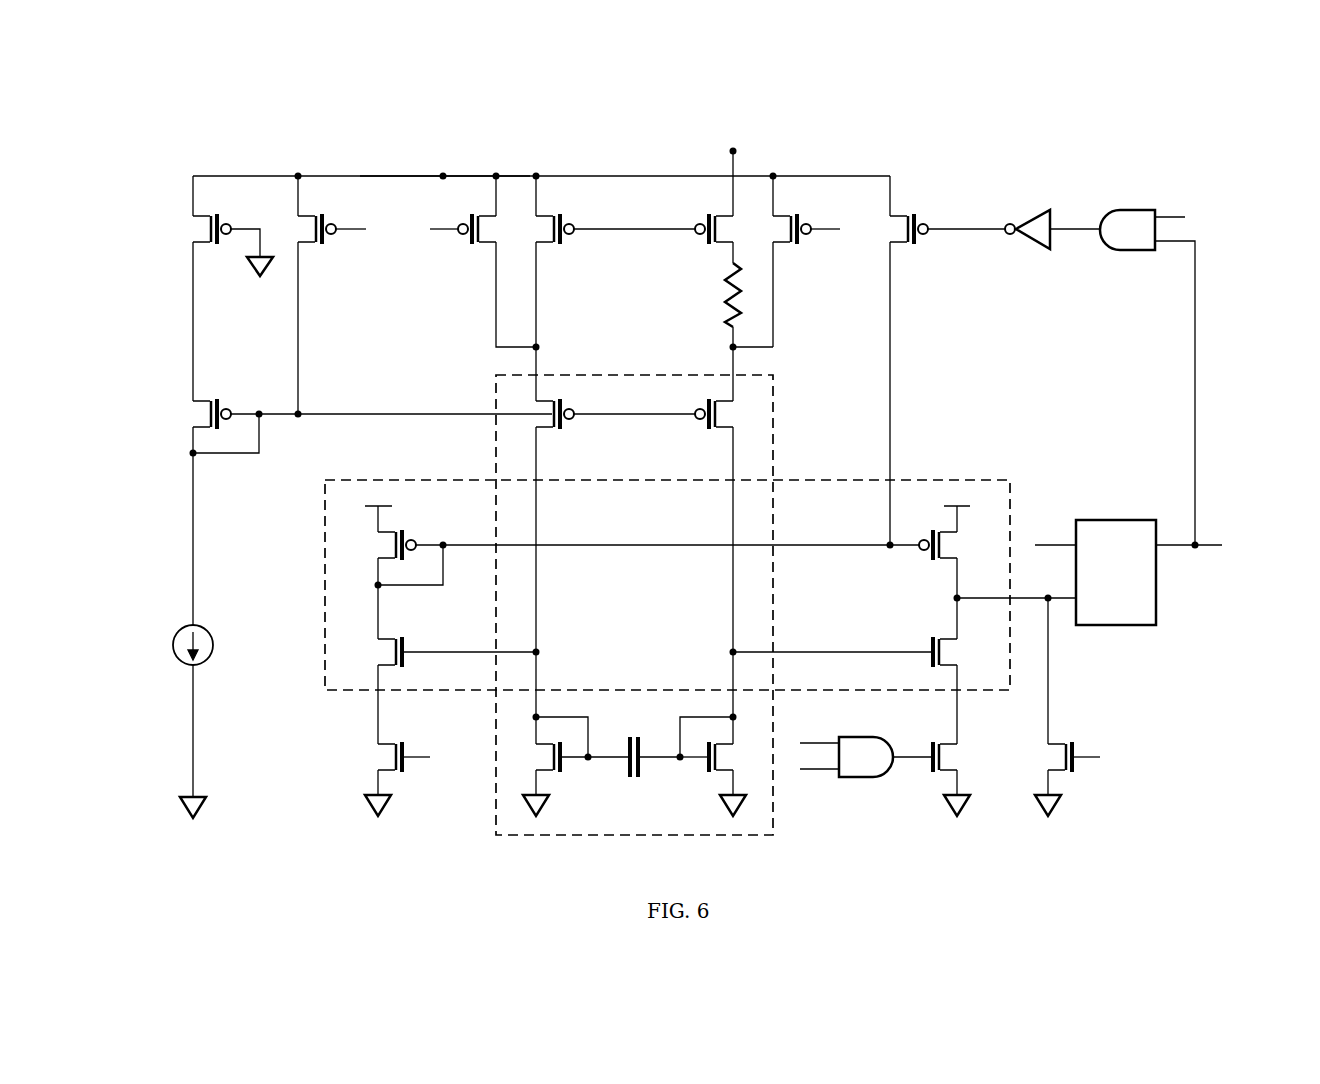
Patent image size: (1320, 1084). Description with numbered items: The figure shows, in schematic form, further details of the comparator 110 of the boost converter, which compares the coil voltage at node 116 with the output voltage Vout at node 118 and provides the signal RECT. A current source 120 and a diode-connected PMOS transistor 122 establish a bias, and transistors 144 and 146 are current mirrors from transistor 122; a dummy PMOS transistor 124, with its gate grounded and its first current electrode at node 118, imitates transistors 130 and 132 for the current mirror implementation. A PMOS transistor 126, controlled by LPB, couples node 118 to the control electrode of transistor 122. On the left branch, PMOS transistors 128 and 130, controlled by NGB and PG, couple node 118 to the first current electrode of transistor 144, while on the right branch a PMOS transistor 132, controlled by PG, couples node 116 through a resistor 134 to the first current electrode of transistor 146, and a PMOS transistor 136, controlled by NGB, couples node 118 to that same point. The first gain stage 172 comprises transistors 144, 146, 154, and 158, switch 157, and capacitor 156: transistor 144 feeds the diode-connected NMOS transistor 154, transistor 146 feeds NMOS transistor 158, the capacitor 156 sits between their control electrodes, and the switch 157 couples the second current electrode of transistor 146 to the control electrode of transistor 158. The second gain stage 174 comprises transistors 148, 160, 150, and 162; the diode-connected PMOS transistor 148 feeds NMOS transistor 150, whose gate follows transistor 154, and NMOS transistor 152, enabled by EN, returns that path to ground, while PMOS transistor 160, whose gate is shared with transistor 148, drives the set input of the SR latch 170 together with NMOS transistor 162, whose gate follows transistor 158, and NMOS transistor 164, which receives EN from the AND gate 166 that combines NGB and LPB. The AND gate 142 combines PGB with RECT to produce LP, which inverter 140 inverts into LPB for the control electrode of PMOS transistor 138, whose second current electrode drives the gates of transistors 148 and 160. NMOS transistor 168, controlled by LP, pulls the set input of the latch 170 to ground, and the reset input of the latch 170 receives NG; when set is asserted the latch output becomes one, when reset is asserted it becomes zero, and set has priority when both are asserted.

The comparator 110 is at (157, 142).
The node 116 is at (733, 151).
The node 118 is at (443, 176).
The current source 120 is at (173, 645).
The PMOS transistor 122 is at (208, 414).
The PMOS transistor 124 is at (208, 229).
The PMOS transistor 126 is at (328, 246).
The PMOS transistor 128 is at (470, 246).
The PMOS transistor 130 is at (566, 246).
The PMOS transistor 132 is at (709, 246).
The resistor 134 is at (722, 299).
The PMOS transistor 136 is at (806, 246).
The PMOS transistor 138 is at (920, 215).
The inverter 140 is at (1034, 214).
The AND gate 142 is at (1140, 210).
The transistor 144 is at (566, 431).
The transistor 146 is at (707, 431).
The PMOS transistor 148 is at (392, 545).
The NMOS transistor 150 is at (392, 652).
The NMOS transistor 152 is at (392, 757).
The NMOS transistor 154 is at (560, 772).
The capacitor 156 is at (636, 779).
The switch 157 is at (733, 717).
The NMOS transistor 158 is at (708, 772).
The PMOS transistor 160 is at (943, 545).
The NMOS transistor 162 is at (943, 652).
The NMOS transistor 164 is at (943, 757).
The AND gate 166 is at (857, 778).
The NMOS transistor 168 is at (1075, 742).
The set-reset latch 170 is at (1112, 627).
The first gain stage 172 is at (620, 375).
The second gain stage 174 is at (978, 480).